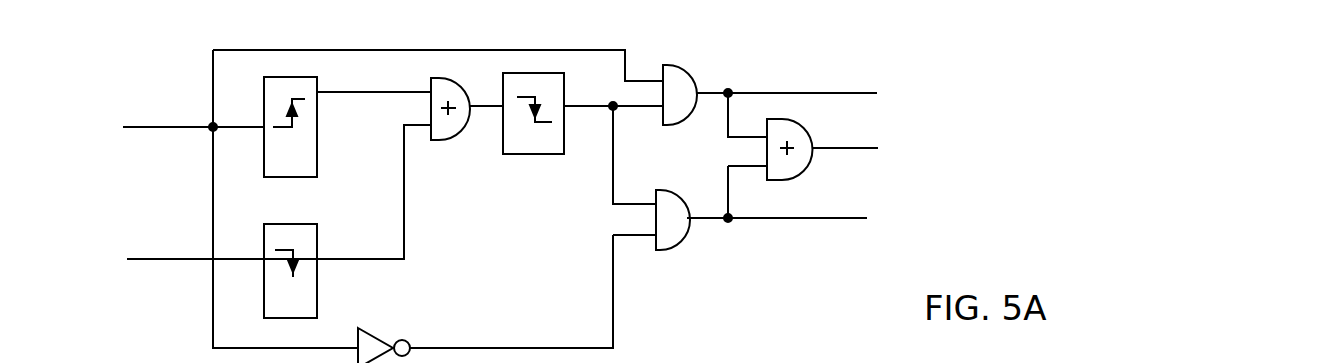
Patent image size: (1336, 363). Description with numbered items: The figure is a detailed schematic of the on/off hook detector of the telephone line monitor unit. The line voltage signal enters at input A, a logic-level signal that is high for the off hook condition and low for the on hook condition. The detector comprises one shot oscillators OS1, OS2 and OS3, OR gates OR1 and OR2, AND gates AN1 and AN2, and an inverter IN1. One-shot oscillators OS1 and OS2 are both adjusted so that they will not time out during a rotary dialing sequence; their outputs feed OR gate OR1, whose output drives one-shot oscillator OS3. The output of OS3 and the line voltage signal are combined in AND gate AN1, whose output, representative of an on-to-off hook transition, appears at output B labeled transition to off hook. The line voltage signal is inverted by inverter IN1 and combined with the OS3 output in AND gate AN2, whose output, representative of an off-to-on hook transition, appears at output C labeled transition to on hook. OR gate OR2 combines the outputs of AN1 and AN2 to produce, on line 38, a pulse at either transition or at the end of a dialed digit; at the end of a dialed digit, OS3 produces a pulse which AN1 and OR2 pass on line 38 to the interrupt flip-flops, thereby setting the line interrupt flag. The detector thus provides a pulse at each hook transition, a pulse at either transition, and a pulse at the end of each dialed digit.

The line voltage input A is at (111, 140).
The transition to off hook output B is at (813, 93).
The transition to on hook output C is at (810, 218).
The line 38 is at (833, 148).
The one shot oscillator OS1 is at (290, 127).
The one shot oscillator OS2 is at (290, 271).
The one shot oscillator OS3 is at (533, 113).
The OR gate OR1 is at (450, 125).
The OR gate OR2 is at (789, 163).
The AND gate AN1 is at (674, 112).
The AND gate AN2 is at (670, 235).
The inverter IN1 is at (384, 333).